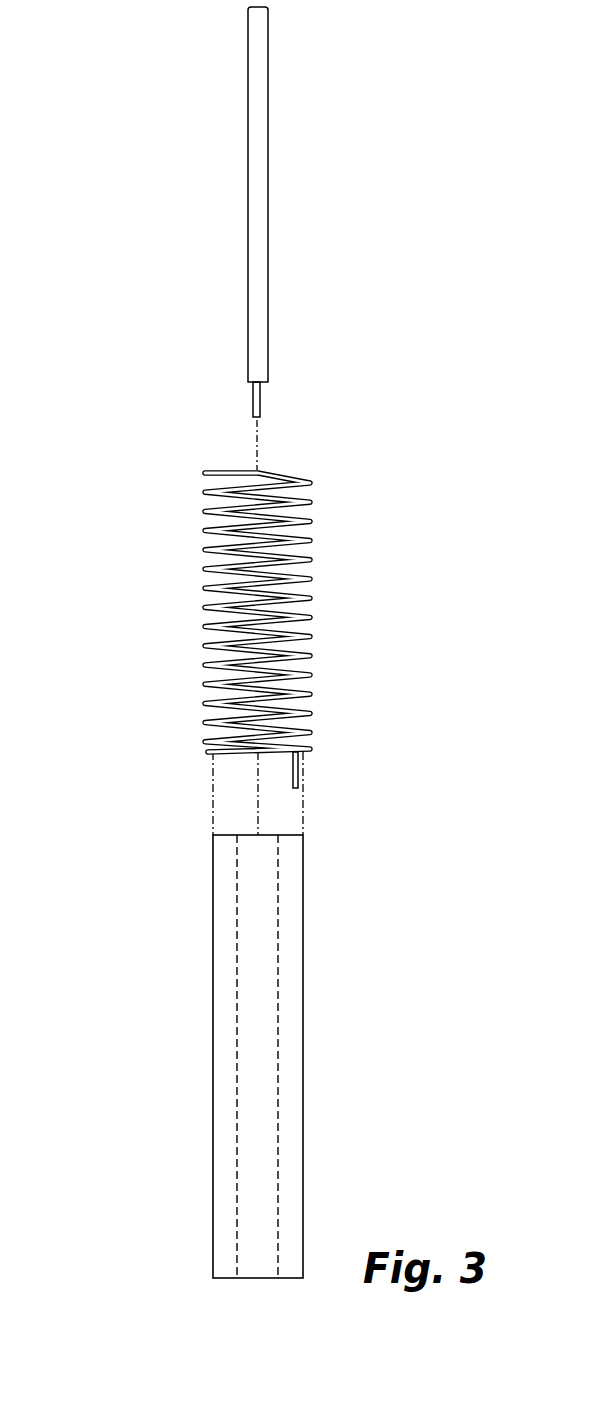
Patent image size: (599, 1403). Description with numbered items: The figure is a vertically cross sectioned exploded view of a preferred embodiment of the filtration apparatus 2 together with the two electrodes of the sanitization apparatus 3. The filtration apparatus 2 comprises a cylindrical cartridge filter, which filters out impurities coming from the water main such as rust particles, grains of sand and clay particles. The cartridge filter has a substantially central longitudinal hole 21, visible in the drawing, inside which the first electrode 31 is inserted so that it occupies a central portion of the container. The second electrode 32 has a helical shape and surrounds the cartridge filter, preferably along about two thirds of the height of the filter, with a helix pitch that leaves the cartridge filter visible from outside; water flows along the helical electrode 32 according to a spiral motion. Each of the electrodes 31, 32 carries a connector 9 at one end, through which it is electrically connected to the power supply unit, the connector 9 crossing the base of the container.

The filtration apparatus 2 is at (305, 1056).
The sanitization apparatus 3 is at (126, 386).
The connector 9 is at (260, 403).
The longitudinal central hole 21 is at (261, 972).
The first electrode 31 is at (268, 212).
The second electrode 32 is at (313, 617).